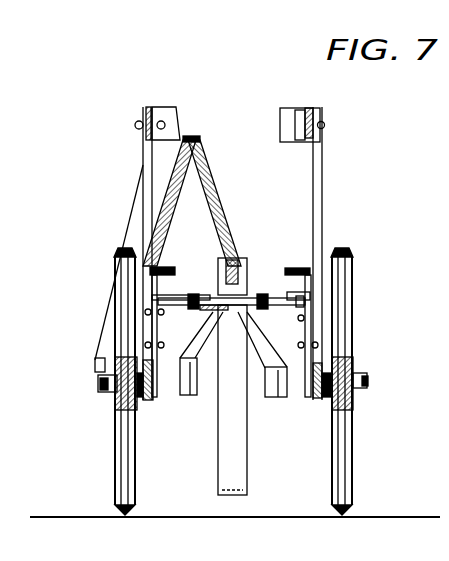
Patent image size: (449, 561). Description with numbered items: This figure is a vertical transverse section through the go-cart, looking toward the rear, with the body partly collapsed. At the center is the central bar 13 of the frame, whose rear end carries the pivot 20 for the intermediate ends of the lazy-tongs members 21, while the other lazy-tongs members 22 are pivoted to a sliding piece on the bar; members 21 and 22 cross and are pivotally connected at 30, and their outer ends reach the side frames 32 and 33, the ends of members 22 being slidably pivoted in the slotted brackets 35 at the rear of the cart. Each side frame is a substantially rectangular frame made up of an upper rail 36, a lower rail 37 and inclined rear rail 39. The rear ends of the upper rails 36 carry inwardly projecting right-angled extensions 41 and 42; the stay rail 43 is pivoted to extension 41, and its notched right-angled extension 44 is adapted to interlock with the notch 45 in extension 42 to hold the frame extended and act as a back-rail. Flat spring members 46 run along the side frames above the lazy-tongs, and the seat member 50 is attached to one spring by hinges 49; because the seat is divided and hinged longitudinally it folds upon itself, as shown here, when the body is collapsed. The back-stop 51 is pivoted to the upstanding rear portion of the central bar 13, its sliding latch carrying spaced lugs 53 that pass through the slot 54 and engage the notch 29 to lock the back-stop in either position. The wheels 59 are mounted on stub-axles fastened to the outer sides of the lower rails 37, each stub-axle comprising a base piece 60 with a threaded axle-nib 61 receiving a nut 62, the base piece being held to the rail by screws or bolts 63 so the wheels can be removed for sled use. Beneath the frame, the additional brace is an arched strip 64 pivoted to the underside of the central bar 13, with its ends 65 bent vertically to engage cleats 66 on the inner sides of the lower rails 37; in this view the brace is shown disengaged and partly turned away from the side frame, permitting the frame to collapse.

The central bar 13 is at (233, 346).
The pivot 20 is at (260, 296).
The lazy-tongs members 21 is at (200, 312).
The lazy-tongs members 22 is at (200, 310).
The notch 29 is at (245, 262).
The pivotal connection 30 is at (193, 298).
The side frame 32 is at (135, 160).
The side frame 33 is at (331, 207).
The brackets 35 is at (152, 340).
The upper rails 36 is at (149, 107).
The lower rails 37 is at (115, 420).
The rear rails 39 is at (322, 160).
The right-angled extension 41 is at (170, 113).
The right-angled extension 42 is at (320, 138).
The stay rail 43 is at (106, 320).
The notched right-angled extension 44 is at (98, 365).
The notch 45 is at (310, 110).
The spring members 46 is at (150, 268).
The hinges 49 is at (122, 249).
The seat member 50 is at (165, 193).
The back-stop 51 is at (248, 465).
The lugs 53 is at (220, 262).
The slot 54 is at (238, 255).
The wheels 59 is at (140, 272).
The base piece 60 is at (115, 395).
The axle-nib 61 is at (100, 388).
The nut 62 is at (98, 383).
The screws or bolts 63 is at (153, 395).
The arched strip 64 is at (202, 338).
The ends 65 is at (192, 398).
The cleats or brackets 66 is at (140, 400).